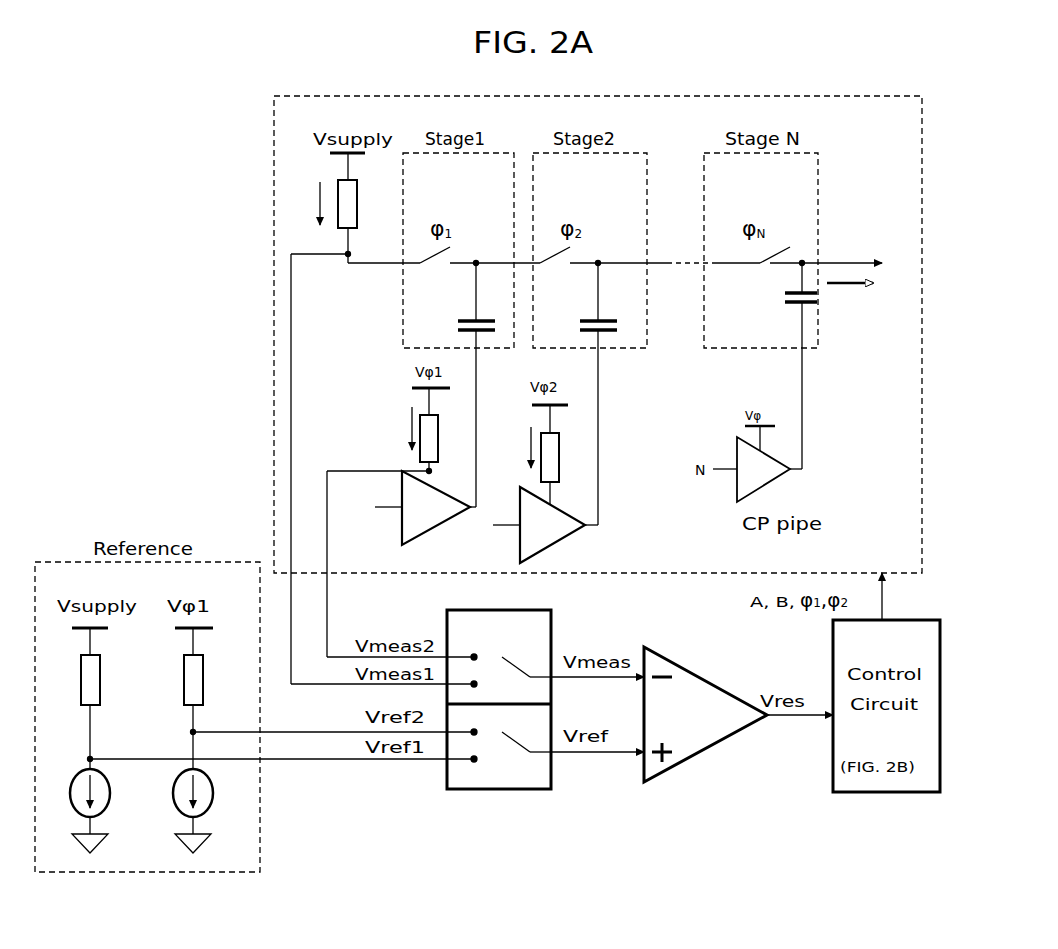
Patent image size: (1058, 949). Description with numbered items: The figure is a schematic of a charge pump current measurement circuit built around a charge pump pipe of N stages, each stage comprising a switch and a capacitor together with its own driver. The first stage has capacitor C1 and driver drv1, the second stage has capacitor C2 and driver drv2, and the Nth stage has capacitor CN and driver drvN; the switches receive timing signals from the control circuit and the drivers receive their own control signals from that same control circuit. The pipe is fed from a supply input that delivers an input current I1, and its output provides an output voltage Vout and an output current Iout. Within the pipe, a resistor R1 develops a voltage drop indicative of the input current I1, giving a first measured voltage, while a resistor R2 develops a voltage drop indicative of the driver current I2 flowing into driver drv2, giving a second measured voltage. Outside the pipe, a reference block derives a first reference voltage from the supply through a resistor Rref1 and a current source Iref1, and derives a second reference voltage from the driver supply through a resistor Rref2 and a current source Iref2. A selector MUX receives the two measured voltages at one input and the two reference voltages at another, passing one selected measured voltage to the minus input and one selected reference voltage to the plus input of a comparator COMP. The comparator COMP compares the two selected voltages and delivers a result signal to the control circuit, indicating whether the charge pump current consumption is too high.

The resistor R1 is at (359, 204).
The input current I1 is at (307, 203).
The resistor R2 is at (500, 448).
The driver current I2 is at (458, 437).
The capacitor C1 is at (479, 384).
The capacitor C2 is at (601, 393).
The capacitor CN is at (786, 365).
The driver drv1 is at (425, 508).
The driver drv2 is at (545, 525).
The driver drvN is at (757, 469).
The output voltage Vout is at (826, 253).
The output current Iout is at (850, 296).
The resistor Rref1 is at (114, 680).
The resistor Rref2 is at (219, 680).
The current source Iref1 is at (109, 793).
The current source Iref2 is at (214, 793).
The selector MUX is at (499, 699).
The comparator COMP is at (705, 714).